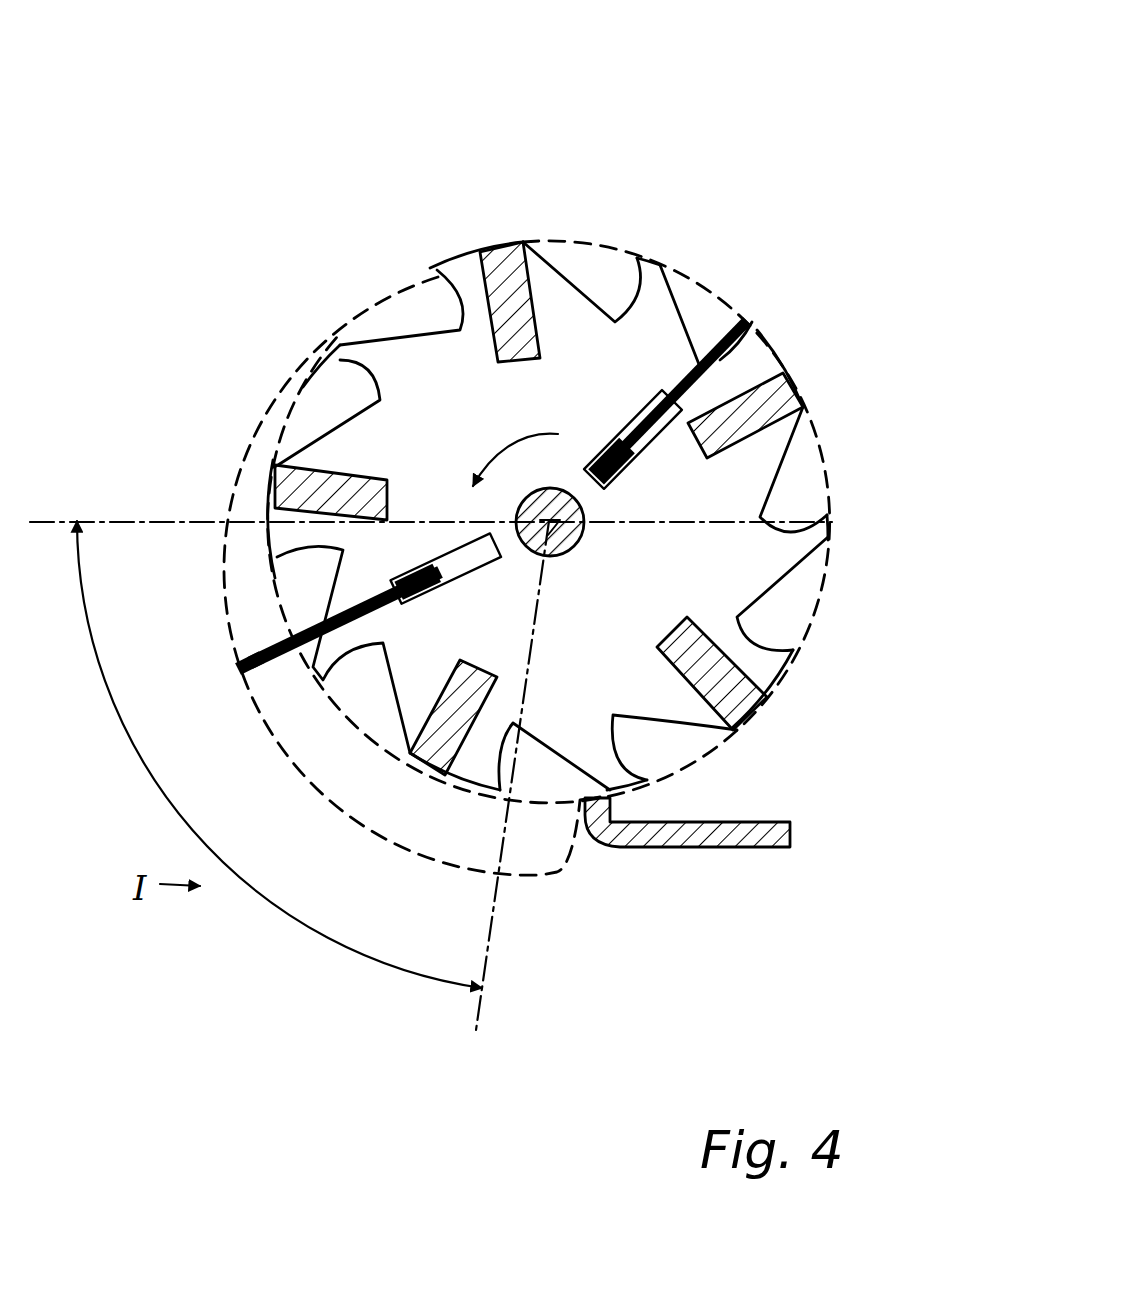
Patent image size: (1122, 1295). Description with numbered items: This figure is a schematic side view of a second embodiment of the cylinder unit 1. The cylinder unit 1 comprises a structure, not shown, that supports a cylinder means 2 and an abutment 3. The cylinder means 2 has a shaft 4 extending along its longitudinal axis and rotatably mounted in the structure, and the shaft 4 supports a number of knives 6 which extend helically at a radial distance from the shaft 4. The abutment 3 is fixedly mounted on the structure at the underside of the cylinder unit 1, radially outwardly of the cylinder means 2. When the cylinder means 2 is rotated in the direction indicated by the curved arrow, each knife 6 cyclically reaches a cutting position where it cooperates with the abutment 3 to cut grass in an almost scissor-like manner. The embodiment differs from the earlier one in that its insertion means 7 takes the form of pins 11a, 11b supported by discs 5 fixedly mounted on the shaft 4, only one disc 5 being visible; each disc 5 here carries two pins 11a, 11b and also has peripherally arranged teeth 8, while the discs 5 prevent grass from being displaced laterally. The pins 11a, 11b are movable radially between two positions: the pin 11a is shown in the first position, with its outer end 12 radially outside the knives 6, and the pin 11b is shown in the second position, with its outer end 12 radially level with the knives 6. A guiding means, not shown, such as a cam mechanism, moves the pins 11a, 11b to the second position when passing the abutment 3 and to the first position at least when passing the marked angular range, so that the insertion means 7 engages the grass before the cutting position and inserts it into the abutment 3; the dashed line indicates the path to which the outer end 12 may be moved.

The cylinder unit 1 is at (789, 779).
The cylinder means 2 is at (522, 406).
The abutment 3 is at (716, 840).
The shaft 4 is at (584, 523).
The disc 5 is at (623, 367).
The knife 6 is at (280, 468).
The insertion means 7 is at (760, 322).
The teeth 8 is at (430, 270).
The pin 11a is at (262, 647).
The pin 11b is at (757, 321).
The outer end 12 is at (235, 668).